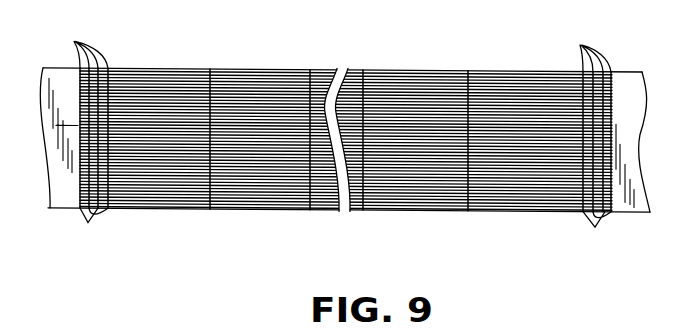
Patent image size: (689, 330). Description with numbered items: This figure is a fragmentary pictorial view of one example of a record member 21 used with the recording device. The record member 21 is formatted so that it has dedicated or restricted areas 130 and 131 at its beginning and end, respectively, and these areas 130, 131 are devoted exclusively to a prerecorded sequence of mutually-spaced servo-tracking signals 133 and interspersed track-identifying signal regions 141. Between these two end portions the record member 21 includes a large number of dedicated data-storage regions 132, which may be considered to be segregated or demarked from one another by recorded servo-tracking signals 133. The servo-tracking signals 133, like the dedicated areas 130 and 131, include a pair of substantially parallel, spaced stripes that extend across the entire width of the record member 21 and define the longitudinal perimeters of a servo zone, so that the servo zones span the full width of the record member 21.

The record member 21 is at (492, 40).
The dedicated area at beginning 130 is at (118, 230).
The dedicated area at end 131 is at (614, 222).
The data-storage region 132 is at (157, 62).
The servo-tracking signal 133 is at (476, 233).
The track-identifying signal region 141 is at (345, 233).